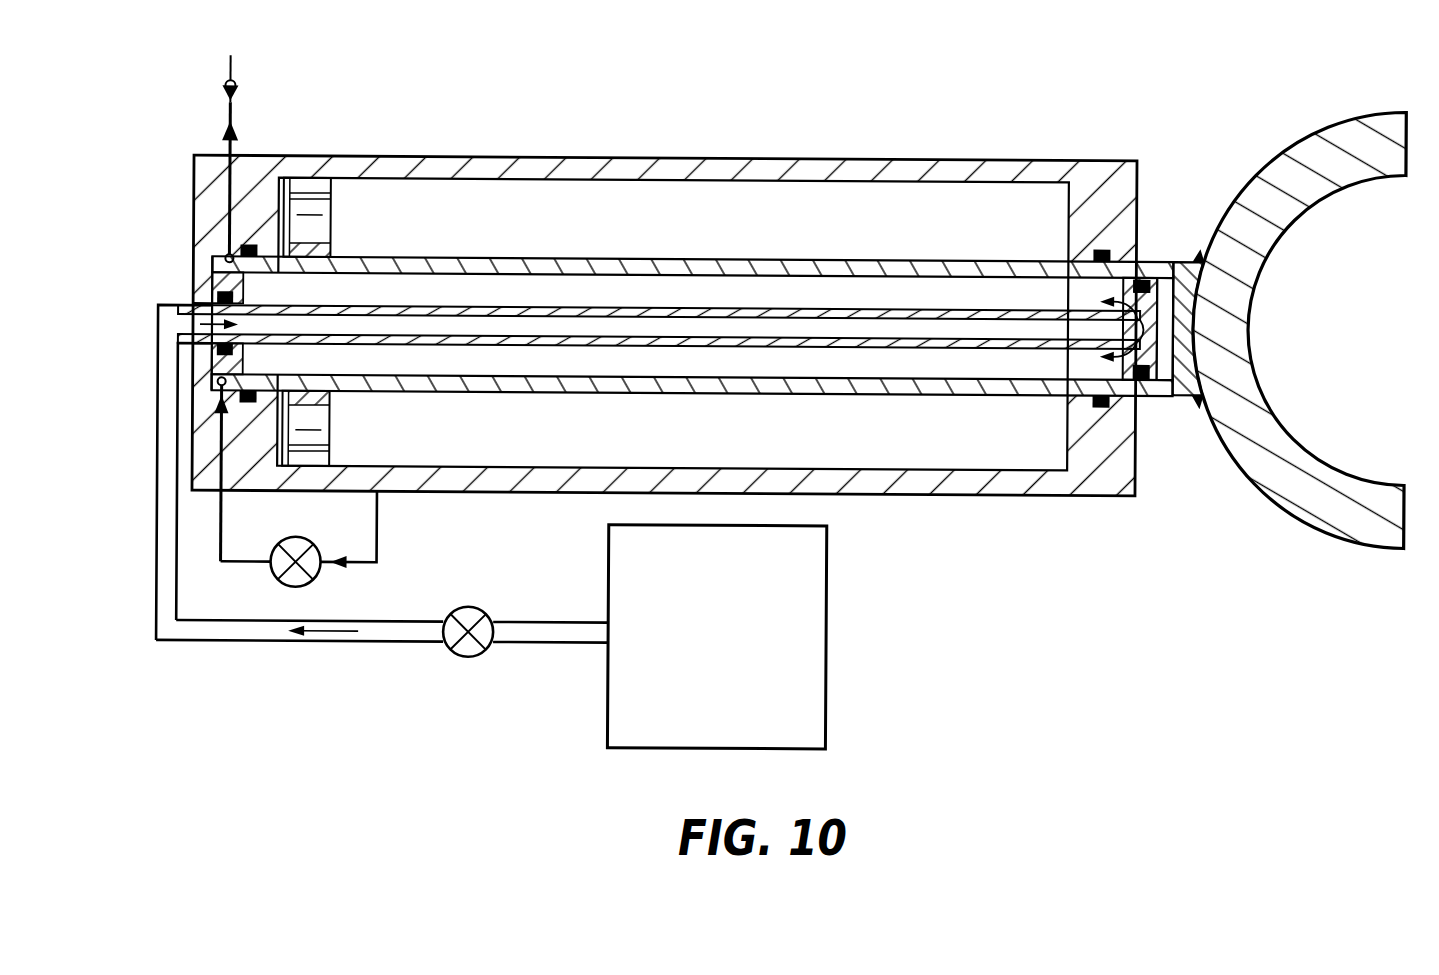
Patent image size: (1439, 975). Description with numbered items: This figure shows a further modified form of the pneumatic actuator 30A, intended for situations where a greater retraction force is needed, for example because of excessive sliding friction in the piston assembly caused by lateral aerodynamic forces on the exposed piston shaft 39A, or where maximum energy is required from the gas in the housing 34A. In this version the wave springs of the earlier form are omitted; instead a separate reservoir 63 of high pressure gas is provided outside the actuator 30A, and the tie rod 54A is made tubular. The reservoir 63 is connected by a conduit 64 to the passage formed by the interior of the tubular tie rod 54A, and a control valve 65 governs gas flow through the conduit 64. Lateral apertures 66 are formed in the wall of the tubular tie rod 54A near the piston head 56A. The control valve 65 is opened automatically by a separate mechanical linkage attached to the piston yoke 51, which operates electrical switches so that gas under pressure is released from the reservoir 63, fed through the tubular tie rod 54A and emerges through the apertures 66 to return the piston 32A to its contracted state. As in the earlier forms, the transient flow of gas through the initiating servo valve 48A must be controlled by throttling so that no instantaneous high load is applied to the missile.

The pneumatic actuator 30A is at (718, 288).
The piston 32A is at (499, 260).
The housing 34A is at (672, 172).
The piston shaft 39A is at (1176, 250).
The initiating servo valve 48A is at (302, 578).
The piston yoke 51 is at (1325, 496).
The tubular tie rod 54A is at (905, 304).
The piston head 56A is at (1170, 385).
The reservoir 63 is at (780, 645).
The conduit 64 is at (160, 474).
The control valve 65 is at (470, 658).
The lateral apertures 66 is at (1150, 270).